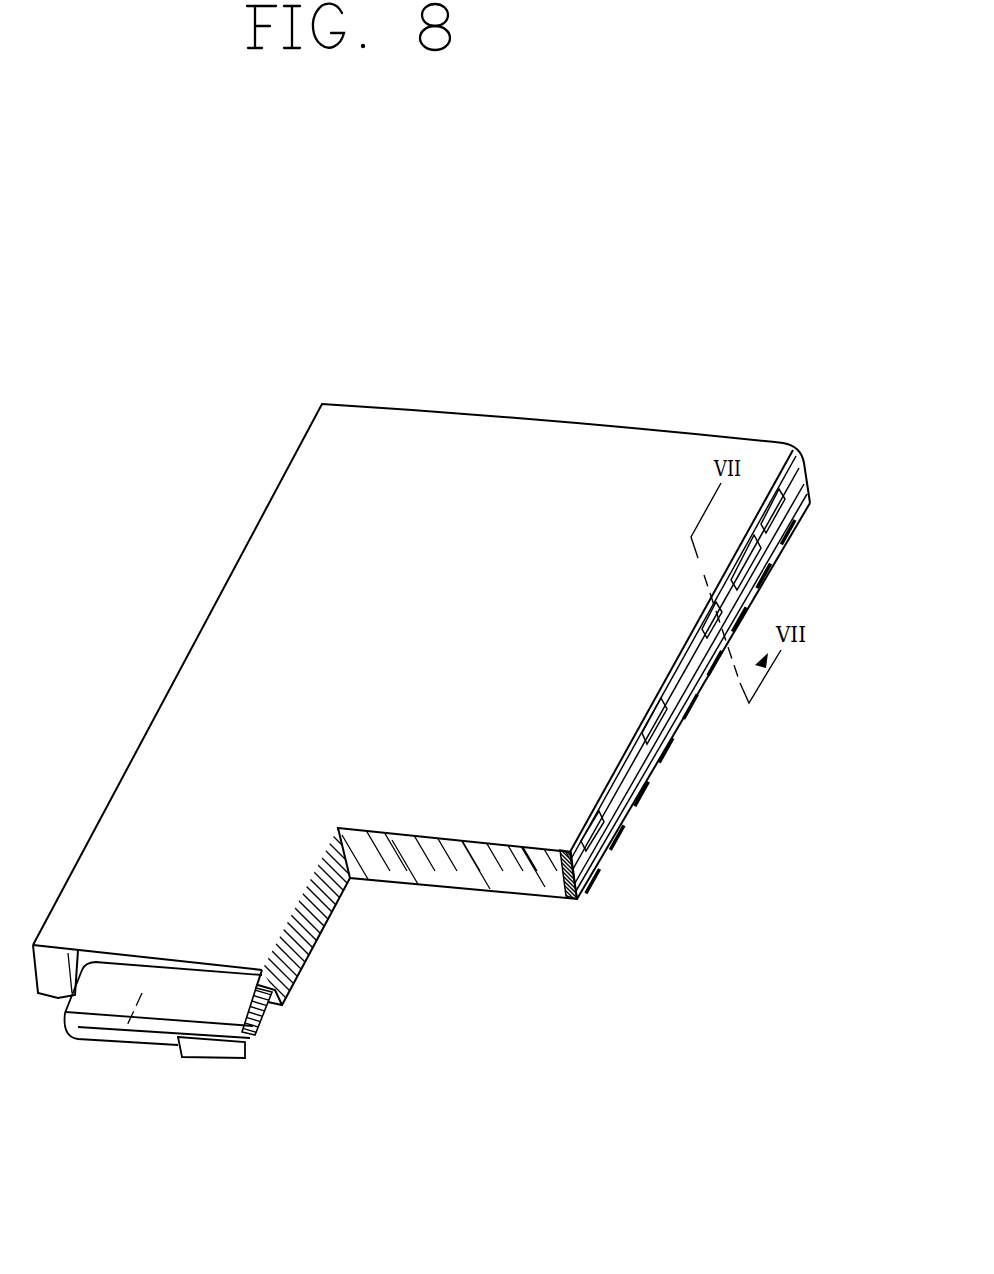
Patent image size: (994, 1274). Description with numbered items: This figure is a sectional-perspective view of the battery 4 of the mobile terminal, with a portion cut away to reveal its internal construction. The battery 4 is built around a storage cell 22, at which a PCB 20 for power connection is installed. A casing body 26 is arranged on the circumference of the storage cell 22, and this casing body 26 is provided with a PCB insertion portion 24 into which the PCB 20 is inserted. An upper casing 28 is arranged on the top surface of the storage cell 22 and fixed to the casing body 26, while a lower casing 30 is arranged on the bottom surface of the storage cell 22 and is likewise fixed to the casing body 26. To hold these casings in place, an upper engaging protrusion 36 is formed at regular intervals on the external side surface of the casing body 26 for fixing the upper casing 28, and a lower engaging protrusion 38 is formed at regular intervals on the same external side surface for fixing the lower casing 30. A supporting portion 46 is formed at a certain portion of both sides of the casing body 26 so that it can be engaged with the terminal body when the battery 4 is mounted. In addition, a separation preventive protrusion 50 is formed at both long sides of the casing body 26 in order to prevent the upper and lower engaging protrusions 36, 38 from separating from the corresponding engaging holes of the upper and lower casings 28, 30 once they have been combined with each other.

The battery 4 is at (213, 587).
The PCB 20 is at (307, 967).
The storage cell 22 is at (484, 894).
The PCB insertion portion 24 is at (121, 1046).
The casing body 26 is at (577, 902).
The upper casing 28 is at (663, 705).
The lower casing 30 is at (677, 738).
The upper engaging protrusion 36 is at (597, 832).
The lower engaging protrusion 38 is at (607, 872).
The supporting portion 46 is at (768, 552).
The separation preventive protrusion 50 is at (640, 773).